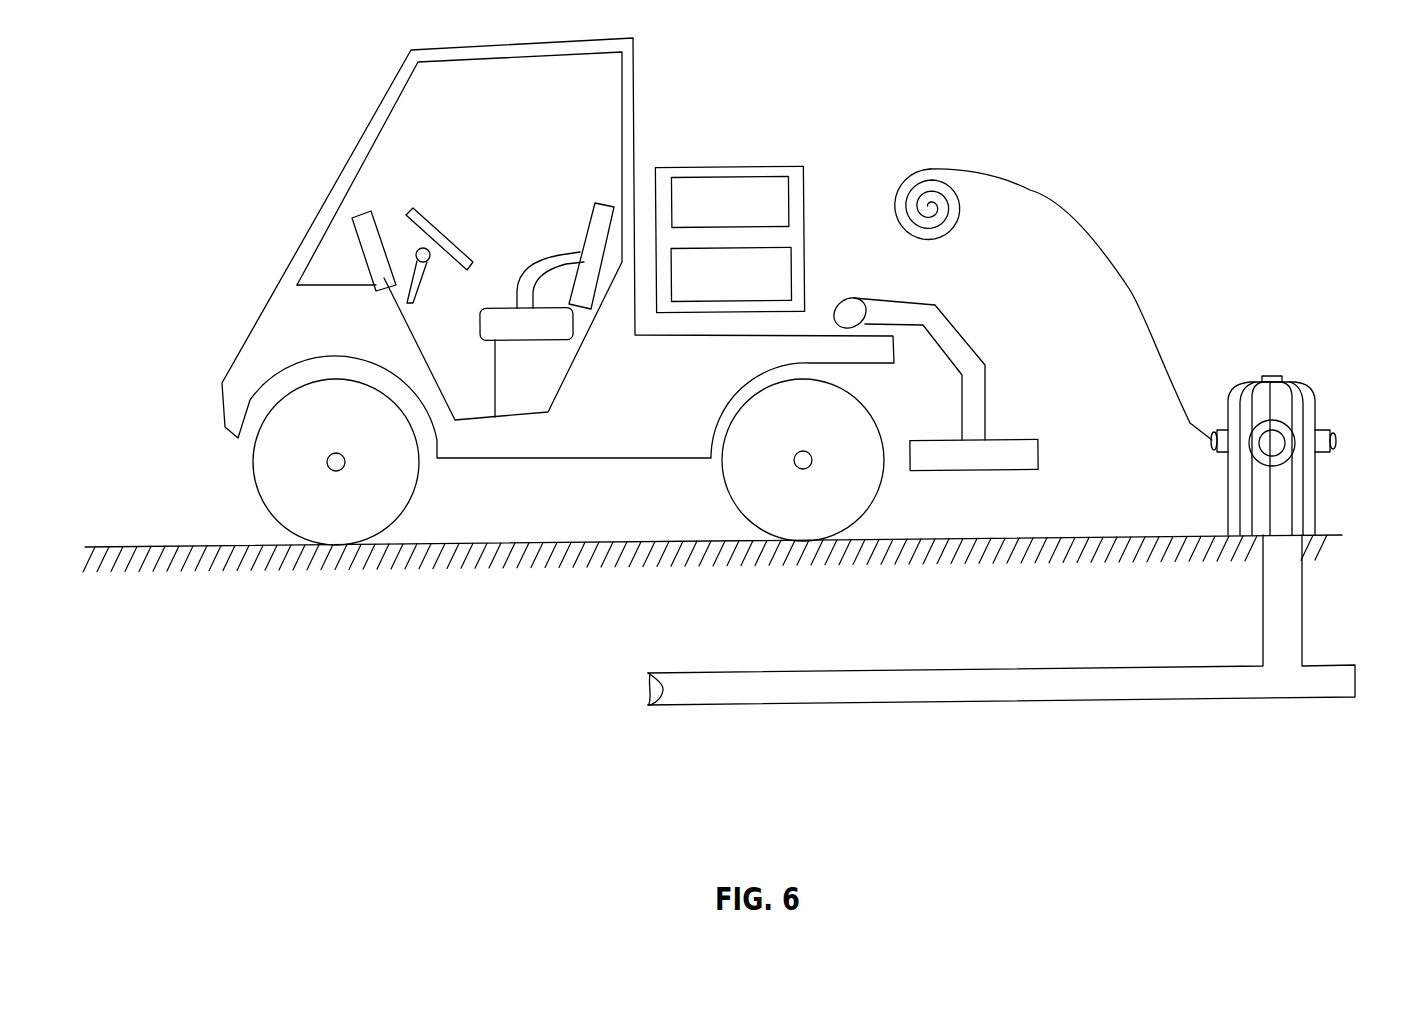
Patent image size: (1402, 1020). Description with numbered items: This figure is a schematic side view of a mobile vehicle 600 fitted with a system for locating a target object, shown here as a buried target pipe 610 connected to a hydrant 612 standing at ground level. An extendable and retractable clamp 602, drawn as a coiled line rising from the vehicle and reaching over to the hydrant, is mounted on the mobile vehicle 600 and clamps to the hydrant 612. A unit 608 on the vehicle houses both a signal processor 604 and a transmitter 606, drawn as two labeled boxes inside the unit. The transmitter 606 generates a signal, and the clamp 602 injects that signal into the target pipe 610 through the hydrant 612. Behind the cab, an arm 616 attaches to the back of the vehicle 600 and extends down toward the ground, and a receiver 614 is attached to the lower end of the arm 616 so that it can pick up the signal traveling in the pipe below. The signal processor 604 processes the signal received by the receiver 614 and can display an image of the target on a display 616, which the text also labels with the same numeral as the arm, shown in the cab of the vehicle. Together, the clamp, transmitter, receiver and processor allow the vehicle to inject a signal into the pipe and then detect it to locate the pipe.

The mobile vehicle 600 is at (212, 110).
The extendable and retractable clamp 602 is at (1008, 183).
The signal processor 604 is at (790, 202).
The transmitter 606 is at (792, 270).
The unit 608 is at (757, 206).
The target pipe 610 is at (1067, 717).
The hydrant 612 is at (1272, 375).
The receiver 614 is at (1039, 458).
The arm 616 is at (380, 214).